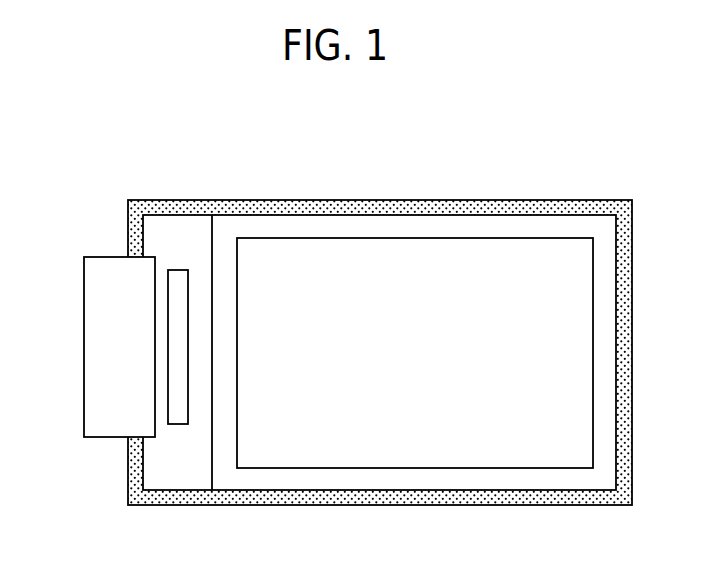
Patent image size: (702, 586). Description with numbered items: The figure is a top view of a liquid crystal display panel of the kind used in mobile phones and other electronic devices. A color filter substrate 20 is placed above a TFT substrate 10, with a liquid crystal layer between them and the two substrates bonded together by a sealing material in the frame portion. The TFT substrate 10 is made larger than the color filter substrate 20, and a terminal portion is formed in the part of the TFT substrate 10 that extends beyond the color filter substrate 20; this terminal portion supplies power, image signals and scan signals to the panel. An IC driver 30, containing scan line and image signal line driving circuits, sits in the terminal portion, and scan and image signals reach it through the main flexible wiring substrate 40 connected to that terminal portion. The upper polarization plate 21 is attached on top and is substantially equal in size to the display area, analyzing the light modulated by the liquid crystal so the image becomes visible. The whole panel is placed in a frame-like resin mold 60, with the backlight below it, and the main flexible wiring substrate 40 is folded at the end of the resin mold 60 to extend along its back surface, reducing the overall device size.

The TFT substrate 10 is at (176, 230).
The color filter substrate 20 is at (341, 230).
The upper polarization plate 21 is at (483, 260).
The IC driver 30 is at (178, 322).
The main flexible wiring substrate 40 is at (100, 347).
The resin mold 60 is at (185, 496).